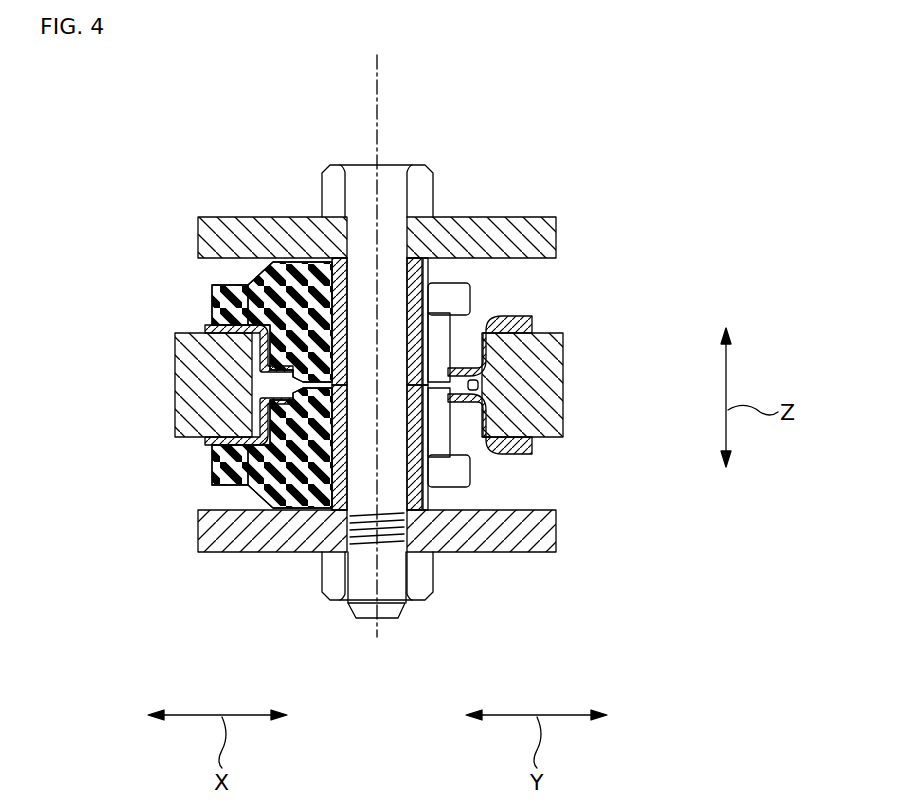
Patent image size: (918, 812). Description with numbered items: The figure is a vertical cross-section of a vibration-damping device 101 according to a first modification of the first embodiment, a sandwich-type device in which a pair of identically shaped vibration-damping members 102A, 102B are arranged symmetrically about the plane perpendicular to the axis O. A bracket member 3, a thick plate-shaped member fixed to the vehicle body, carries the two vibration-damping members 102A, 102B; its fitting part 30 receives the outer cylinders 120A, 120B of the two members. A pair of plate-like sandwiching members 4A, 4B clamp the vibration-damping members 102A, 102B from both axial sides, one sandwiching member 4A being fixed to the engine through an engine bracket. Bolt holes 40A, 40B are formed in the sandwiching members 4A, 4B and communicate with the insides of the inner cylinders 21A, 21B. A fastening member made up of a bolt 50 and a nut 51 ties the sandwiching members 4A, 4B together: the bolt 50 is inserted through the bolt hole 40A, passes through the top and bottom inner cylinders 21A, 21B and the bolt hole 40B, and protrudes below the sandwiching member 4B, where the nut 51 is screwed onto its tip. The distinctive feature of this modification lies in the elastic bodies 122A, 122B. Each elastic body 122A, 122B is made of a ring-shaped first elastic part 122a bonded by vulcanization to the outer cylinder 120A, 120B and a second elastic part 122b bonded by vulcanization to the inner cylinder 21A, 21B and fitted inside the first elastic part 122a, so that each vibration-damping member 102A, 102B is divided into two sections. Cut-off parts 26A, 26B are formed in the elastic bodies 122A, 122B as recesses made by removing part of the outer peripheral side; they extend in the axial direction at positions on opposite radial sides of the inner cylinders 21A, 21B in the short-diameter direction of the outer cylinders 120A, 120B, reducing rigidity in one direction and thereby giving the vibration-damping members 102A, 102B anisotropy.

The vibration-damping device 101 is at (538, 124).
The axis O is at (380, 112).
The sandwiching member 4A is at (548, 237).
The sandwiching member 4B is at (548, 540).
The bolt 50 is at (362, 178).
The nut 51 is at (425, 590).
The bolt hole 40A is at (412, 217).
The bolt hole 40B is at (350, 533).
The inner cylinder 21A is at (326, 268).
The inner cylinder 21B is at (330, 480).
The vibration-damping member 102A is at (200, 222).
The vibration-damping member 102B is at (200, 542).
The elastic body 122A is at (292, 102).
The elastic body 122B is at (292, 645).
The first elastic part 122a is at (238, 285).
The second elastic part 122b is at (280, 285).
The outer cylinder 120A is at (250, 356).
The outer cylinder 120B is at (250, 410).
The bracket member 3 is at (351, 385).
The fitting part 30 is at (472, 390).
The cut-off part 26A is at (456, 340).
The cut-off part 26B is at (456, 428).